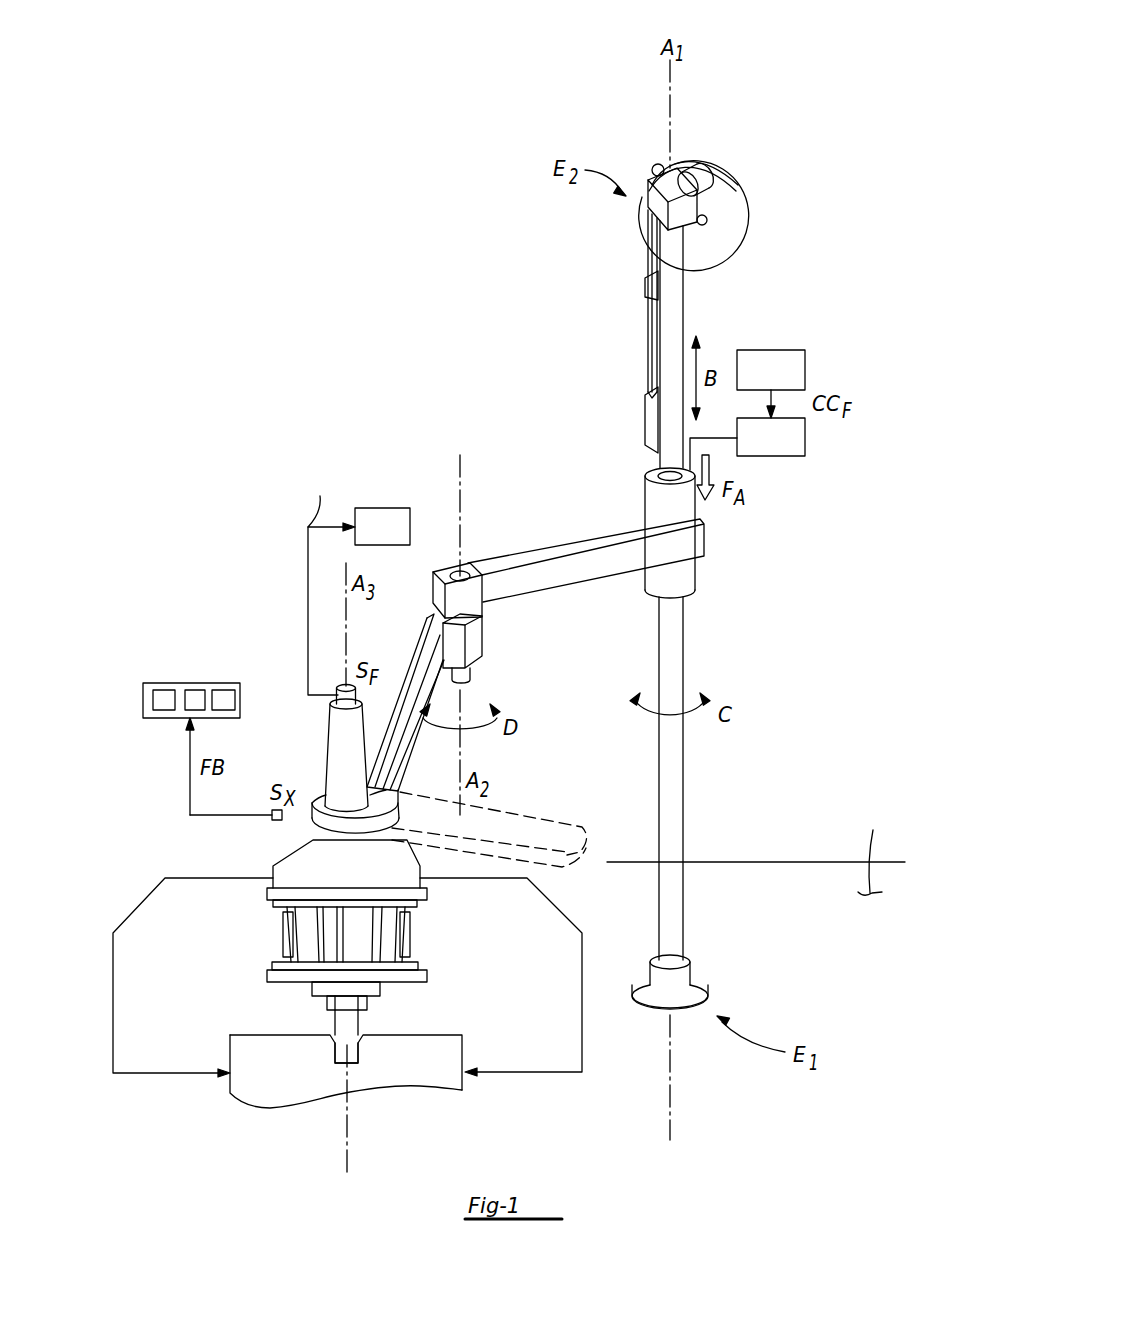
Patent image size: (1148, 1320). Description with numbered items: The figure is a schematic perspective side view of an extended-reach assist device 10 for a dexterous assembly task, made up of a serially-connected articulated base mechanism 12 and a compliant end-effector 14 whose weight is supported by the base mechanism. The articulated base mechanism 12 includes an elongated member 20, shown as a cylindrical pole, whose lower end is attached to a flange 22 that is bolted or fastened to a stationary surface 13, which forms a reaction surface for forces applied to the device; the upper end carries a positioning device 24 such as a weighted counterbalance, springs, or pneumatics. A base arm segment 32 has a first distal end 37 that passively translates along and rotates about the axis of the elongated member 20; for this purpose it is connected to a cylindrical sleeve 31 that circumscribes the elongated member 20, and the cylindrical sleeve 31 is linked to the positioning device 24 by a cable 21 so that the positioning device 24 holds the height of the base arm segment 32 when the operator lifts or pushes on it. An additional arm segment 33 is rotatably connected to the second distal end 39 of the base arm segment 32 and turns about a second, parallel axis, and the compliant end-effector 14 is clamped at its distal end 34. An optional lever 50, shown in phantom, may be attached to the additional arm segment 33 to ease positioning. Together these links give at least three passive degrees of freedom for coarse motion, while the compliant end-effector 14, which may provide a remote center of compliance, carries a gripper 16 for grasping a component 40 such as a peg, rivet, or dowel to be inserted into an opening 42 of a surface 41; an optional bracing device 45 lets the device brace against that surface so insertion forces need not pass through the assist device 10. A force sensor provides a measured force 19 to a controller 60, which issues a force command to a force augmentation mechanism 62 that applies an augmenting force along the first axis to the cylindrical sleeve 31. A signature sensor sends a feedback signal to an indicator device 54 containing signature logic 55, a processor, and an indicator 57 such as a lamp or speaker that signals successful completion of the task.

The assist device 10 is at (762, 50).
The articulated base mechanism 12 is at (786, 885).
The stationary surface 13 is at (874, 850).
The compliant end-effector 14 is at (241, 922).
The gripper 16 is at (296, 999).
The measured force 19 is at (331, 583).
The elongated member 20 is at (672, 821).
The cable 21 is at (648, 344).
The flange 22 is at (702, 973).
The positioning device 24 is at (770, 148).
The cylindrical sleeve 31 is at (698, 580).
The base arm segment 32 is at (568, 578).
The additional arm segment 33 is at (395, 757).
The distal end 34 is at (282, 840).
The first distal end 37 is at (732, 540).
The second distal end 39 is at (427, 562).
The component 40 is at (358, 1022).
The surface 41 is at (245, 1033).
The opening 42 is at (349, 1063).
The bracing device 45 is at (582, 1033).
The lever 50 is at (523, 813).
The indicator device 54 is at (143, 700).
The signature logic 55 is at (163, 690).
The indicator 57 is at (222, 690).
The controller 60 is at (580, 447).
The force augmentation mechanism 62 is at (747, 430).